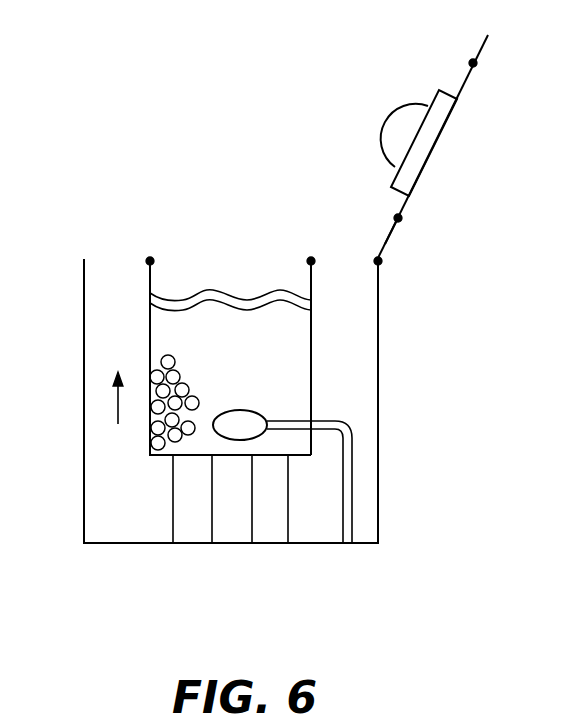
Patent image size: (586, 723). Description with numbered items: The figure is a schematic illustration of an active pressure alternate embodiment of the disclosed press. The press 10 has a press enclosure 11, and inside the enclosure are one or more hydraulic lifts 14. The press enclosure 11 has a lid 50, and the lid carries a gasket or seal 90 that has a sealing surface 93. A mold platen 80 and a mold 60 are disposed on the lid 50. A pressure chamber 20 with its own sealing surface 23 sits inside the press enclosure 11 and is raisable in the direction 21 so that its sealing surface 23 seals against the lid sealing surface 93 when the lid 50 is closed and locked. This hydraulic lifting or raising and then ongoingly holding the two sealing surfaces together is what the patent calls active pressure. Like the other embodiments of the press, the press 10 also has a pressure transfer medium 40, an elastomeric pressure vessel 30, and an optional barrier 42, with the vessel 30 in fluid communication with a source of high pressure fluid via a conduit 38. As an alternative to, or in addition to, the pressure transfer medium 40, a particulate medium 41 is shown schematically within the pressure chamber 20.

The press 10 is at (107, 130).
The press enclosure 11 is at (84, 342).
The hydraulic lifts 14 is at (213, 528).
The pressure chamber 20 is at (311, 378).
The direction 21 is at (117, 414).
The sealing surface 23 is at (310, 259).
The elastomeric pressure vessel 30 is at (265, 418).
The conduit 38 is at (350, 523).
The pressure transfer medium 40 is at (243, 362).
The particulate medium 41 is at (150, 455).
The barrier 42 is at (213, 290).
The lid 50 is at (458, 97).
The mold 60 is at (378, 125).
The mold platen 80 is at (447, 90).
The gasket or seal 90 is at (398, 218).
The lid sealing surface 93 is at (385, 233).